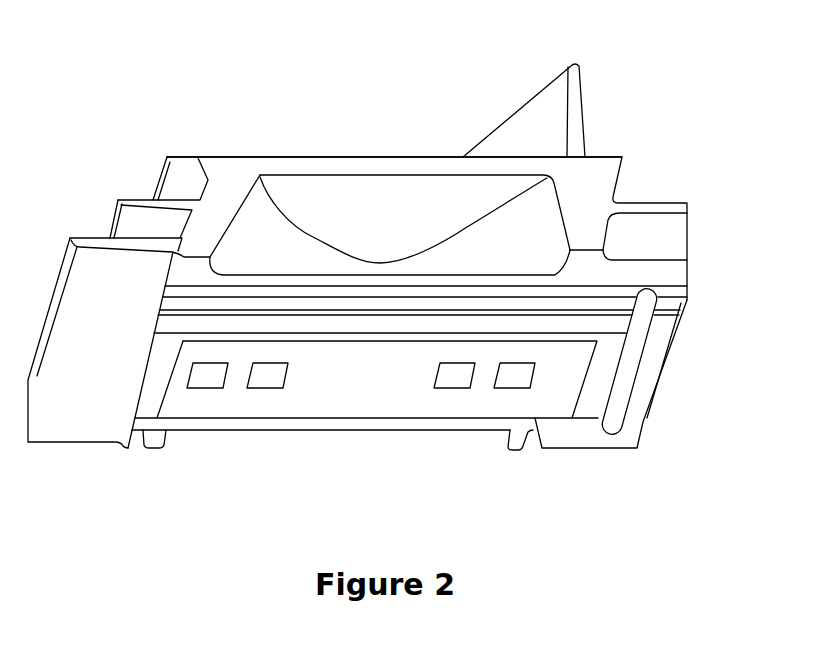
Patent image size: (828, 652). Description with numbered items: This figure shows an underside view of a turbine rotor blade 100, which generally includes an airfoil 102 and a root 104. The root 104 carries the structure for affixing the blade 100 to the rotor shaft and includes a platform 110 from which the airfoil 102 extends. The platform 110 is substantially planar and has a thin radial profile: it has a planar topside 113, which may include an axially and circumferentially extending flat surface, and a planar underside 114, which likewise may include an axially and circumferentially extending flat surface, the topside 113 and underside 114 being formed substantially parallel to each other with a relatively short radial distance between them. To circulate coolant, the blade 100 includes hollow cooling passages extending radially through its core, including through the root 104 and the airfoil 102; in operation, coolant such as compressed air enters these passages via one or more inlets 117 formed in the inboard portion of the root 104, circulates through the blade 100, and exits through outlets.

The turbine rotor blade 100 is at (389, 260).
The airfoil 102 is at (542, 110).
The root 104 is at (692, 332).
The platform 110 is at (187, 148).
The topside 113 is at (300, 157).
The underside 114 is at (412, 237).
The inlets 117 is at (208, 377).